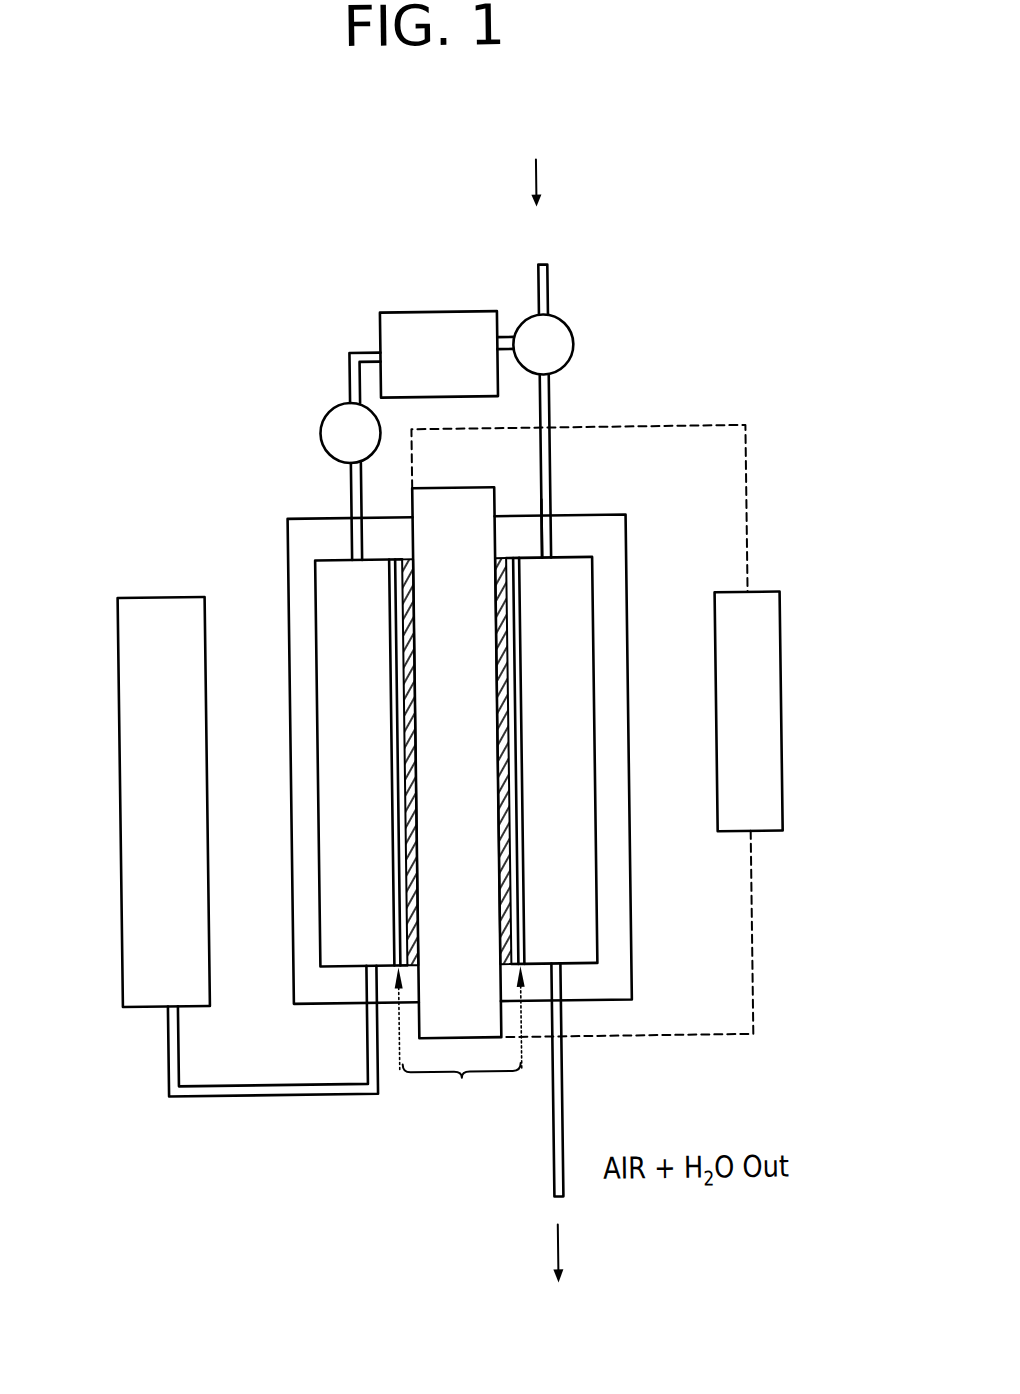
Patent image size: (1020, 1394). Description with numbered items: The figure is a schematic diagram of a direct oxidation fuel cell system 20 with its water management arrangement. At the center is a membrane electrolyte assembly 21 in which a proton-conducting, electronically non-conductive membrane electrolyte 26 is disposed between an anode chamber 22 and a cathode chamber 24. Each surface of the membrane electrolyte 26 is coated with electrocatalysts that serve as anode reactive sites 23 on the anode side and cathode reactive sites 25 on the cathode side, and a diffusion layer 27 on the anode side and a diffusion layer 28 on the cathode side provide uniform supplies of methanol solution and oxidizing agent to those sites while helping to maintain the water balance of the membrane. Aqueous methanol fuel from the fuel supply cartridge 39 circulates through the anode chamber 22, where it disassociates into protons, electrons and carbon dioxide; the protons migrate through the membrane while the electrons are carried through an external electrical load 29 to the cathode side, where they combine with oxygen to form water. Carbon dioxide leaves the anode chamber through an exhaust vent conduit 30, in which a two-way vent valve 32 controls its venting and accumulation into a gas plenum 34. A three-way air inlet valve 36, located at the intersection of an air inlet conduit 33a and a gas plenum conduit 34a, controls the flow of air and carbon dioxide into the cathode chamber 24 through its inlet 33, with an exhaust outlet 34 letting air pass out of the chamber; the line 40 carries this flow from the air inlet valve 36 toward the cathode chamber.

The direct oxidation fuel cell system 20 is at (128, 357).
The membrane electrolyte assembly 21 is at (461, 817).
The anode chamber 22 is at (347, 598).
The anode reactive sites 23 is at (404, 861).
The cathode chamber 24 is at (565, 598).
The cathode reactive sites 25 is at (508, 822).
The membrane electrolyte 26 is at (479, 651).
The diffusion layer 27 is at (395, 908).
The diffusion layer 28 is at (507, 903).
The external electrical load 29 is at (766, 747).
The exhaust vent conduit 30 is at (350, 377).
The vent valve 32 is at (339, 431).
The inlet 33 is at (555, 556).
The air inlet conduit 33a is at (556, 290).
The gas plenum 34 is at (449, 324).
The gas plenum conduit 34a is at (511, 333).
The air inlet valve 36 is at (578, 329).
The fuel supply cartridge 39 is at (134, 863).
The air supply line 40 is at (555, 398).